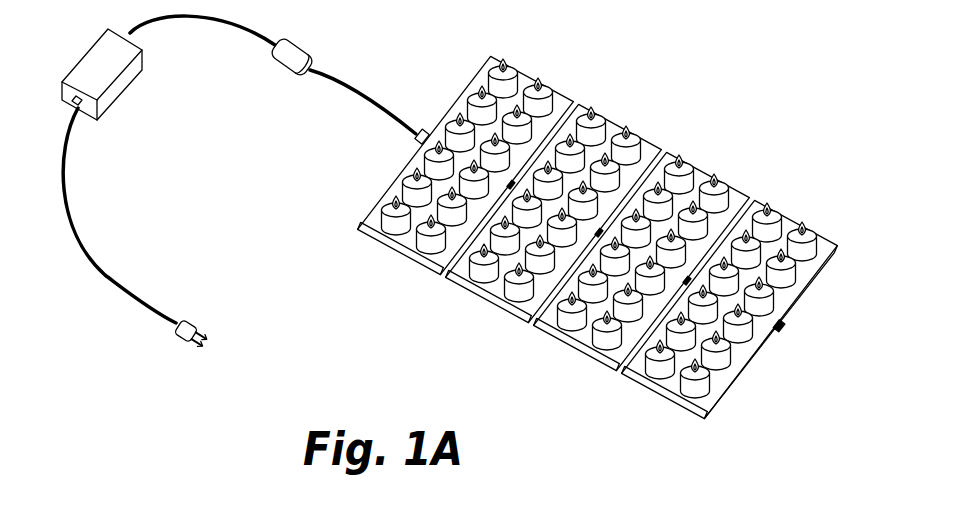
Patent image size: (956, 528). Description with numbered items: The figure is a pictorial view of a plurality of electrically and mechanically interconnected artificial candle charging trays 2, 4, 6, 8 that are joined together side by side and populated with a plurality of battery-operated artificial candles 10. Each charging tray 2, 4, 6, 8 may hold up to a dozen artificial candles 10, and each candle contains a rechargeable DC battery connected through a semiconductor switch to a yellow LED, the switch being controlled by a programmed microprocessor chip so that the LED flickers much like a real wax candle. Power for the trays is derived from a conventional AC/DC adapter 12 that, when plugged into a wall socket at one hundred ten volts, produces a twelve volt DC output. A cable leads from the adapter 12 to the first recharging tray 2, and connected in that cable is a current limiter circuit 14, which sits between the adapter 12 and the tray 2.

The artificial candle charging tray 2 is at (393, 257).
The artificial candle charging tray 4 is at (483, 300).
The artificial candle charging tray 6 is at (569, 357).
The artificial candle charging tray 8 is at (660, 400).
The battery-operated artificial candle 10 is at (508, 68).
The AC/DC adapter 12 is at (122, 93).
The current limiter circuit 14 is at (287, 60).